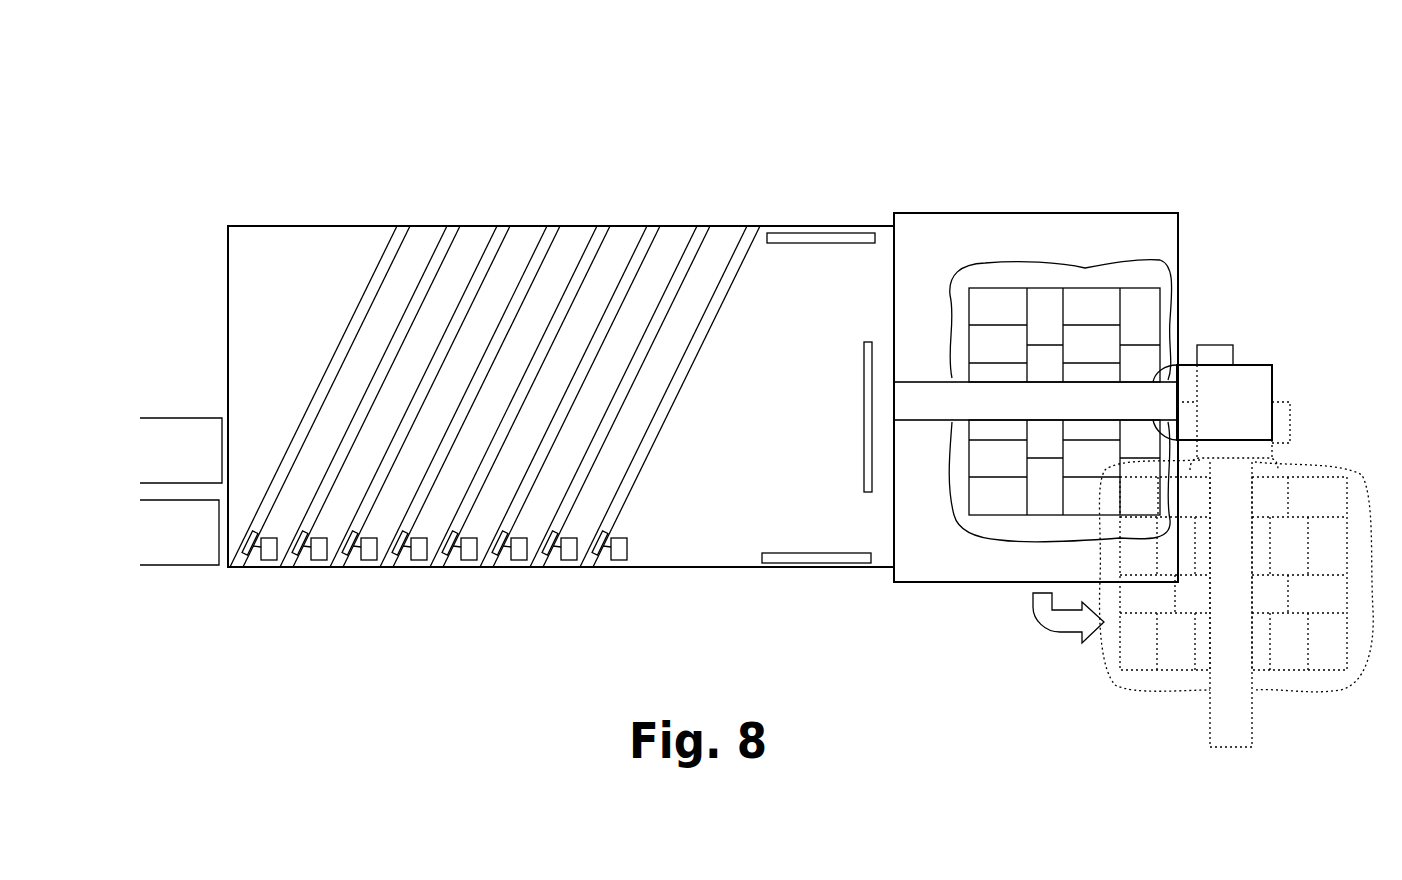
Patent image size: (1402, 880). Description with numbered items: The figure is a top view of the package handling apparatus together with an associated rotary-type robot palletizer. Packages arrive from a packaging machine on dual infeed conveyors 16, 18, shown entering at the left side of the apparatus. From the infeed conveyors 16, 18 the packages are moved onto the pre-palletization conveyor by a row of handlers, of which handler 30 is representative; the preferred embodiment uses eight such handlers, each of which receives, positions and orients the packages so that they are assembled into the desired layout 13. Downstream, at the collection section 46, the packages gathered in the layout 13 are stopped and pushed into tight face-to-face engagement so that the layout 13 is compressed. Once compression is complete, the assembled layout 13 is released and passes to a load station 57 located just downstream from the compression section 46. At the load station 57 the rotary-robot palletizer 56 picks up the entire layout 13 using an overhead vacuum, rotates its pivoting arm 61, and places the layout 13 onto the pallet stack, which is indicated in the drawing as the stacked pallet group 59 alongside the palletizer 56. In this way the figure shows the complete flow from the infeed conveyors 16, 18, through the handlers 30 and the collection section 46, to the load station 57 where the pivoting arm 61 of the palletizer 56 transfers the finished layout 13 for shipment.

The layout 13 is at (1147, 307).
The infeed conveyor 16 is at (195, 455).
The infeed conveyor 18 is at (175, 530).
The handler 30 is at (270, 552).
The collection section 46 is at (817, 588).
The rotary-robot palletizer 56 is at (1022, 596).
The load station 57 is at (985, 598).
The pallet stack envelope 59 is at (1083, 268).
The pivoting arm 61 is at (1053, 398).